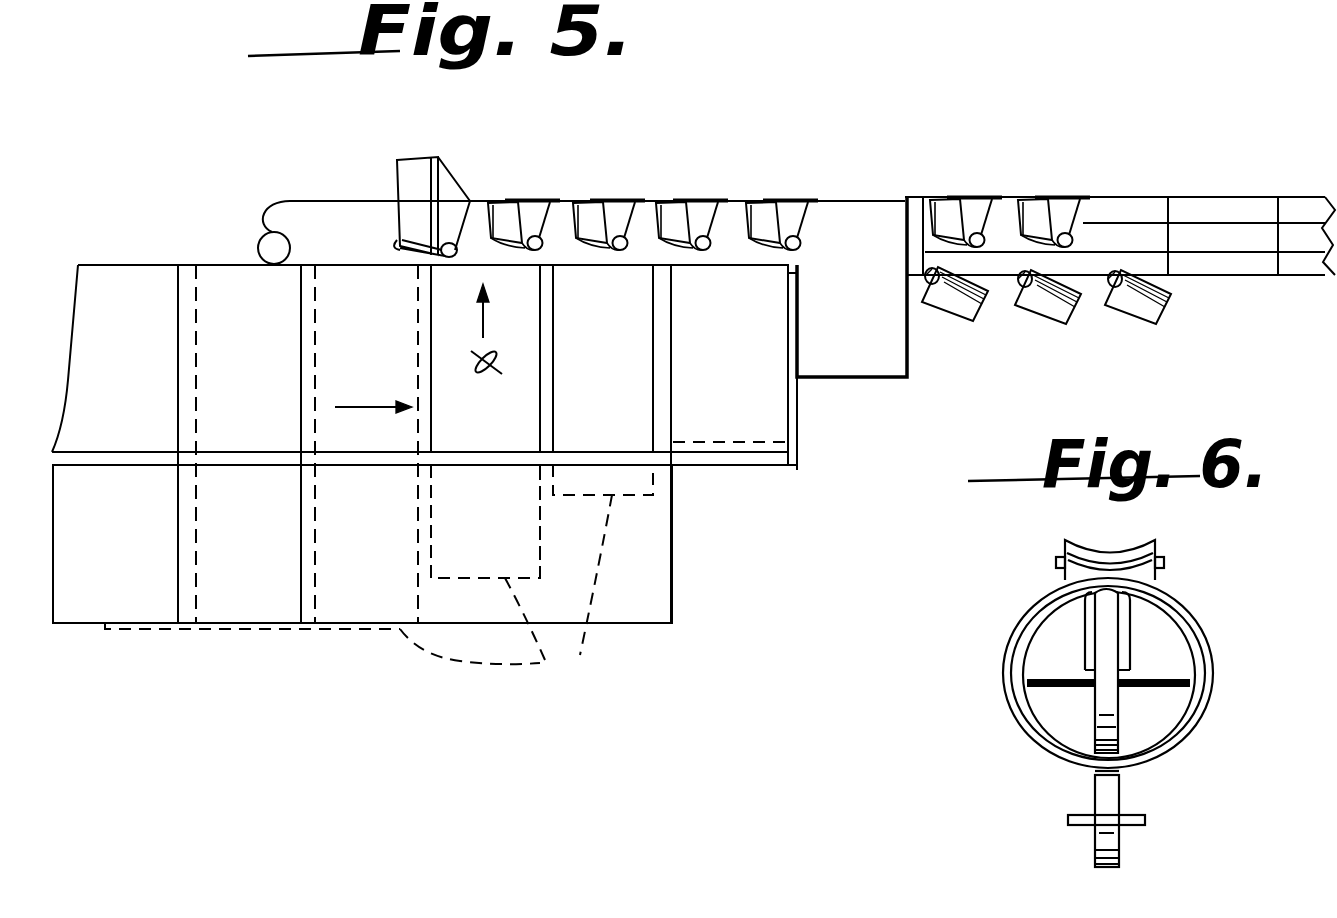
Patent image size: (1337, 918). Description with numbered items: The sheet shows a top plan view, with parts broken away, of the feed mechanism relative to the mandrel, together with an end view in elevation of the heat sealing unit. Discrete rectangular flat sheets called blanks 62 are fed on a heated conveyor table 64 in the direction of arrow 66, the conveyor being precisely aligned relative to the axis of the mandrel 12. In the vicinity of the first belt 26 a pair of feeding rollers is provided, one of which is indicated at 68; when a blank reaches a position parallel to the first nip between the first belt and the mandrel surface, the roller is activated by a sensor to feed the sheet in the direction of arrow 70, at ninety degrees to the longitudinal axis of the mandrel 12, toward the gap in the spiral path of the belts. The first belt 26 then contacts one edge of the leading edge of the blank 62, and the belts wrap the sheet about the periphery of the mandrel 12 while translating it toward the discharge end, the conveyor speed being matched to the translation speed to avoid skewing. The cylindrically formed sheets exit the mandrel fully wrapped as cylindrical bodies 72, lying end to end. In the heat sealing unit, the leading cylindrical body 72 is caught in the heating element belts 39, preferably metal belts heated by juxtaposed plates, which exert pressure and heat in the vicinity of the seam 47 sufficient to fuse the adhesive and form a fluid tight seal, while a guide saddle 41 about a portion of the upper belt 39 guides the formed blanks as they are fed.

In FIG. 5, the mandrel 12 is at (332, 169).
In FIG. 5, the first belt 26 is at (417, 193).
In FIG. 6, the heating element belts 39 is at (1120, 683).
In FIG. 6, the guide saddle 41 is at (1151, 624).
In FIG. 6, the seam 47 is at (1125, 775).
In FIG. 5, the blank 62 is at (888, 345).
In FIG. 6, the blank 62 is at (1033, 591).
In FIG. 5, the heated conveyor table 64 is at (672, 565).
In FIG. 5, the arrow 66 is at (358, 406).
In FIG. 5, the feeding roller 68 is at (497, 376).
In FIG. 5, the arrow 70 is at (487, 313).
In FIG. 5, the cylindrical body 72 is at (1205, 197).